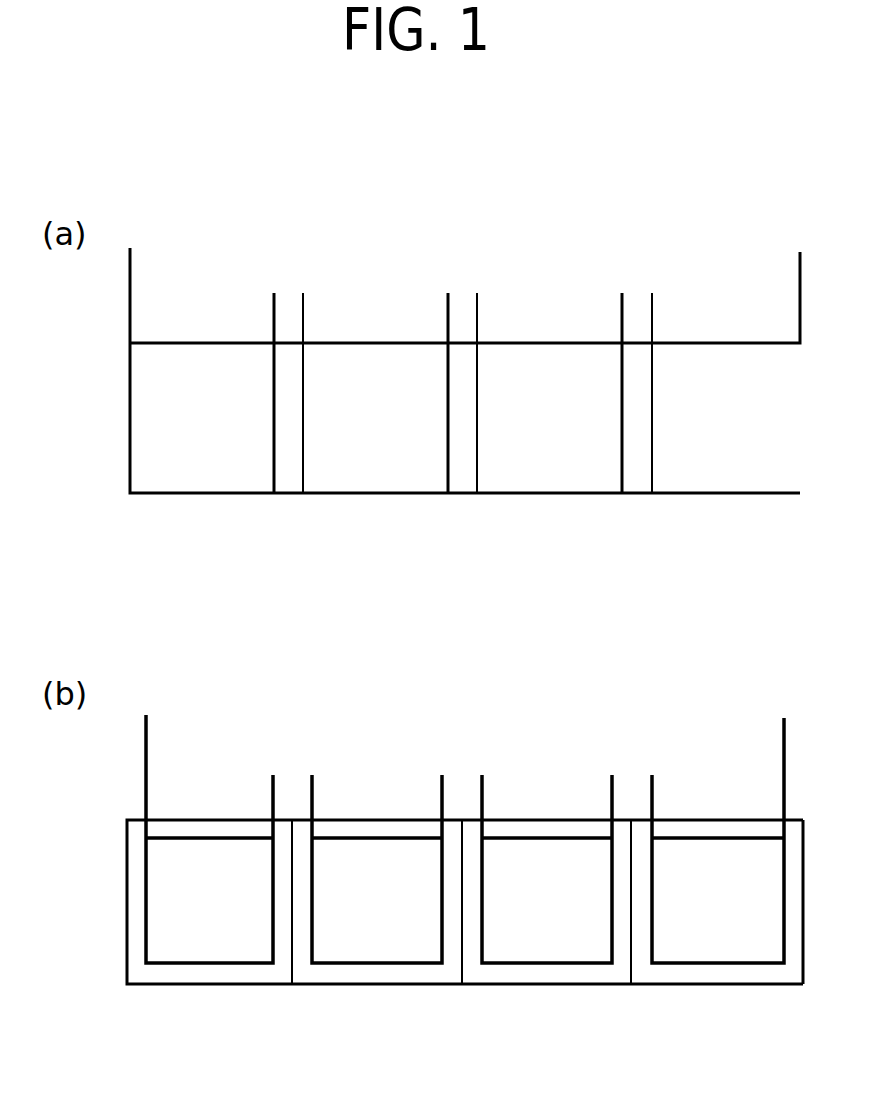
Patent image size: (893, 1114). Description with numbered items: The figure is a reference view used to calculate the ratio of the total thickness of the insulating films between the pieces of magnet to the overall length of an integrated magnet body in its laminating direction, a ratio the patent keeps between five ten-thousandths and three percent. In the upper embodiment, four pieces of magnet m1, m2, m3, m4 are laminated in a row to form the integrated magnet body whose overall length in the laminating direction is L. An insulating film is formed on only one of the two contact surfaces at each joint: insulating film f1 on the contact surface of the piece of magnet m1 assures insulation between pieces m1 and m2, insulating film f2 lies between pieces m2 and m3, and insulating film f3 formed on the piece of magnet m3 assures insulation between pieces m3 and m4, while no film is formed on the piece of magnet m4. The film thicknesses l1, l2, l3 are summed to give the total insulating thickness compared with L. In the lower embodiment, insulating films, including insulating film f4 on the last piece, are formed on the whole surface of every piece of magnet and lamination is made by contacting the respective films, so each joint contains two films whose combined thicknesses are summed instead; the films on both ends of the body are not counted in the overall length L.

The piece of magnet m1 is at (198, 478).
The piece of magnet m2 is at (378, 482).
The piece of magnet m3 is at (540, 485).
The piece of magnet m4 is at (717, 485).
The insulating film f1 is at (290, 482).
The insulating film f2 is at (467, 485).
The insulating film f3 is at (640, 485).
The insulating film f4 is at (763, 972).
The overall length in the laminating direction of the integrated magnet body L is at (800, 261).
The thickness of insulating film l1 is at (242, 308).
The thickness of insulating film l2 is at (416, 308).
The thickness of insulating film l3 is at (590, 308).